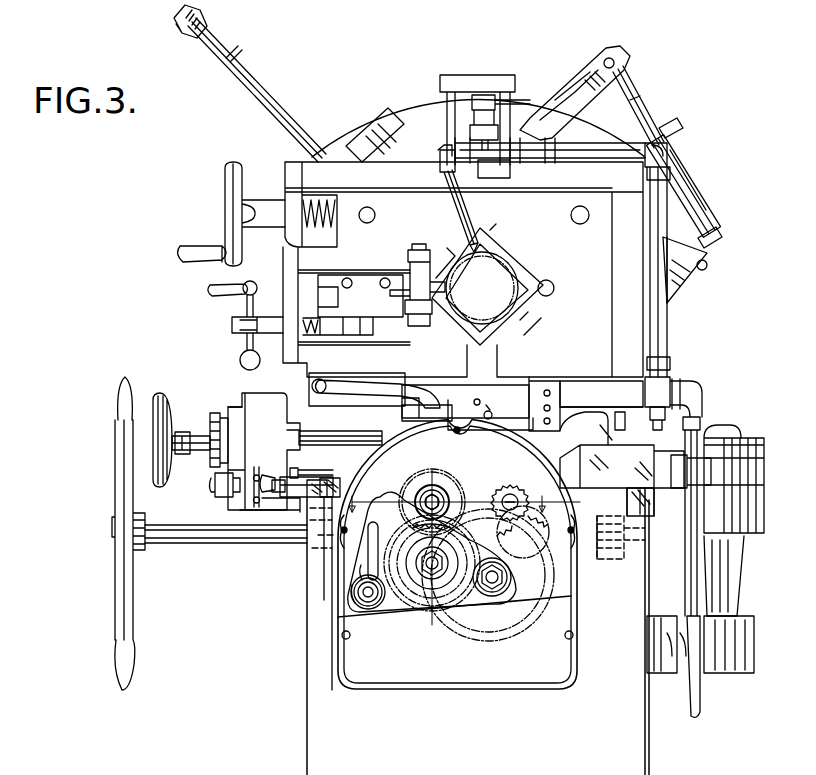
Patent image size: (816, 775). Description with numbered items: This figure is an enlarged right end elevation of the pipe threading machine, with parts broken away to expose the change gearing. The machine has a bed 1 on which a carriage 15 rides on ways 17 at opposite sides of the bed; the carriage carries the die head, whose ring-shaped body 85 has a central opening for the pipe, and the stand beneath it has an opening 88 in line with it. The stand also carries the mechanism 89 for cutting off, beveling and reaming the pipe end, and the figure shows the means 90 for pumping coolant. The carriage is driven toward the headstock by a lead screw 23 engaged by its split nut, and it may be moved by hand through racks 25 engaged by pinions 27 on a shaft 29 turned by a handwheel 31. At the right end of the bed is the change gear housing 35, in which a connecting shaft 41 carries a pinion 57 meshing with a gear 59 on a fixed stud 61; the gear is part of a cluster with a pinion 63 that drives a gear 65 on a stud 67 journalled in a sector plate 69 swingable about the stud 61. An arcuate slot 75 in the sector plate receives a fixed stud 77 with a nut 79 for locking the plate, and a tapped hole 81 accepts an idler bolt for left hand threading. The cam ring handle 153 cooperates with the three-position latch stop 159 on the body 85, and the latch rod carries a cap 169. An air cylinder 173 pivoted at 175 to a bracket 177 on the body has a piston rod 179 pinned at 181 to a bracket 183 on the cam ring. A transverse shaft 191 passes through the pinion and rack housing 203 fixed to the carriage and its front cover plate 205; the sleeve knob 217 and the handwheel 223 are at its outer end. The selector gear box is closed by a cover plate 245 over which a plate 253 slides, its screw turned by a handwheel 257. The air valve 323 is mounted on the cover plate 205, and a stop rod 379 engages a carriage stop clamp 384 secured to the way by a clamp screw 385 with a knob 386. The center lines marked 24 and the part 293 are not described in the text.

The bed 1 is at (298, 707).
The carriage 15 is at (585, 458).
The ways 17 is at (314, 503).
The lead screw 23 is at (436, 494).
The center line arrows 24 is at (464, 547).
The racks 25 is at (346, 478).
The pinions 27 is at (330, 547).
The shaft 29 is at (222, 540).
The handwheel 31 is at (134, 612).
The change gear housing 35 is at (390, 684).
The connecting shaft 41 is at (502, 496).
The pinion 57 is at (512, 486).
The gear 59 is at (542, 533).
The fixed stud 61 is at (504, 572).
The pinion 63 is at (480, 604).
The gear 65 is at (460, 605).
The stud 67 is at (432, 568).
The sector plate 69 is at (384, 500).
The arcuate slot 75 is at (360, 570).
The fixed stud 77 is at (372, 603).
The nut 79 is at (354, 592).
The tapped hole 81 is at (378, 526).
The die head body 85 is at (430, 125).
The opening 88 is at (522, 304).
The mechanism 89 is at (389, 264).
The means for pumping coolant 90 is at (440, 184).
The handle 153 is at (245, 80).
The three-position latch stop 159 is at (368, 128).
The cap 169 is at (204, 16).
The air cylinder 173 is at (694, 182).
The pivot 175 is at (710, 267).
The bracket 177 is at (682, 288).
The piston rod 179 is at (636, 101).
The pin connection 181 is at (616, 60).
The bracket 183 is at (563, 86).
The shaft 191 is at (200, 450).
The pinion and rack housing 203 is at (268, 395).
The front cover plate 205 is at (243, 402).
The knob 217 is at (211, 414).
The handwheel 223 is at (164, 396).
The cover plate 245 is at (562, 382).
The plate 253 is at (528, 382).
The handwheel 257 is at (490, 414).
The lever 293 is at (344, 388).
The air valve 323 is at (214, 487).
The stop rod 379 is at (270, 514).
The carriage stop clamp 384 is at (310, 474).
The clamp screw 385 is at (262, 482).
The knob 386 is at (254, 470).